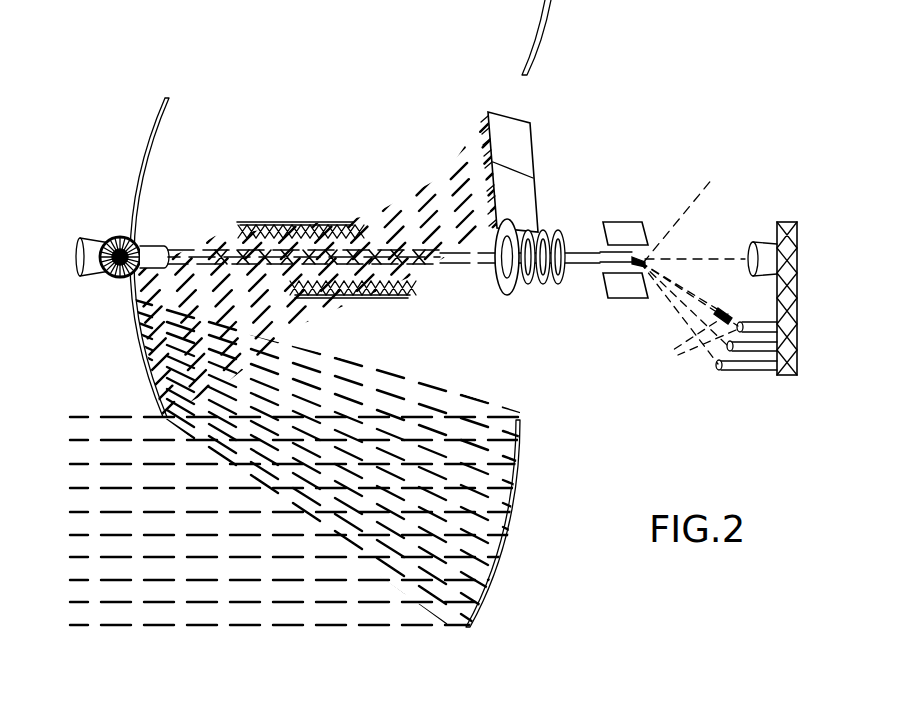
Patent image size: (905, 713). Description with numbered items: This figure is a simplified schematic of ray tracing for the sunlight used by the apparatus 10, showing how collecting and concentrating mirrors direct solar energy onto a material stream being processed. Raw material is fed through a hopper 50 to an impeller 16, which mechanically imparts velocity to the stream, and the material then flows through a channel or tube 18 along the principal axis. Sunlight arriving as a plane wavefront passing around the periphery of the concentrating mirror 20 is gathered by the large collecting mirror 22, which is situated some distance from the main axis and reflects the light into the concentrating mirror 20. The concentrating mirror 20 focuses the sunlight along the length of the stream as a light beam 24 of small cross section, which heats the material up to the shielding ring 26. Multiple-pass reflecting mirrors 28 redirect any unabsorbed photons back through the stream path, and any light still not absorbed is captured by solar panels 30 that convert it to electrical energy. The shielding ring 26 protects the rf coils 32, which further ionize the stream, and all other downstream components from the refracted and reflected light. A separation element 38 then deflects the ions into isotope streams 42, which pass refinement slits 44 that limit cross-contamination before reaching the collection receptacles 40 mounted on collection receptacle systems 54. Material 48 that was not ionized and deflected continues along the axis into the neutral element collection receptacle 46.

The apparatus 10 is at (394, 94).
The impeller 16 is at (116, 236).
The channel or tube 18 is at (160, 240).
The concentrating mirror 20 is at (150, 120).
The collecting mirror 22 is at (508, 530).
The light beam 24 is at (428, 182).
The shielding ring 26 is at (500, 287).
The multiple-pass reflecting mirrors 28 is at (285, 222).
The solar panels 30 is at (525, 150).
The rf coils 32 is at (563, 228).
The separation element 38 is at (622, 230).
The collection receptacles 40 is at (752, 333).
The isotope streams 42 is at (689, 317).
The refinement slits 44 is at (733, 311).
The neutral element collection receptacle 46 is at (763, 253).
The remaining stream material 48 is at (694, 206).
The hopper 50 is at (92, 274).
The collection receptacle systems 54 is at (797, 370).